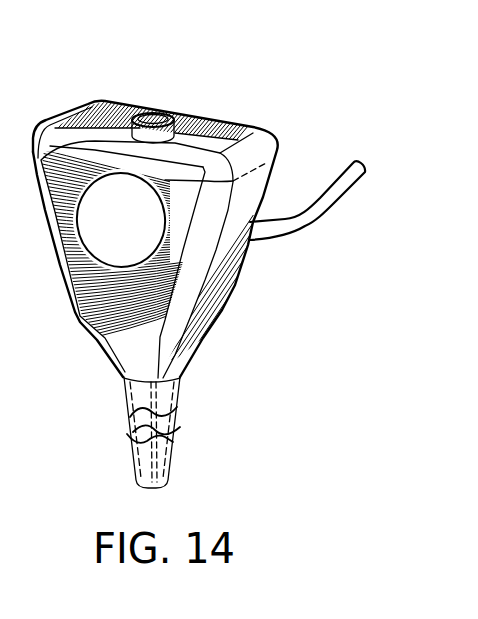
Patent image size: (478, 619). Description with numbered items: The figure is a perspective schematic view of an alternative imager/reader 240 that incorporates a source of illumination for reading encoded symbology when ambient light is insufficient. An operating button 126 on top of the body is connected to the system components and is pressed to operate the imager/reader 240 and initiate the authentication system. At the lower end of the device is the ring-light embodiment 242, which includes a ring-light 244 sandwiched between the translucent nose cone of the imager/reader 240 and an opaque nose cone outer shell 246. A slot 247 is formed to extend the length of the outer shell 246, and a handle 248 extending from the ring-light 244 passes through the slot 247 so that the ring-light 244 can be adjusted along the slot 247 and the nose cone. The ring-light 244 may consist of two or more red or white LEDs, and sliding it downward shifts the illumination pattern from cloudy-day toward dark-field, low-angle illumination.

The operating button 126 is at (153, 119).
The imager/reader 240 is at (293, 136).
The ring-light embodiment 242 is at (195, 383).
The ring-light 244 is at (180, 428).
The nose cone outer shell 246 is at (180, 407).
The slot 247 is at (165, 469).
The handle 248 is at (127, 434).